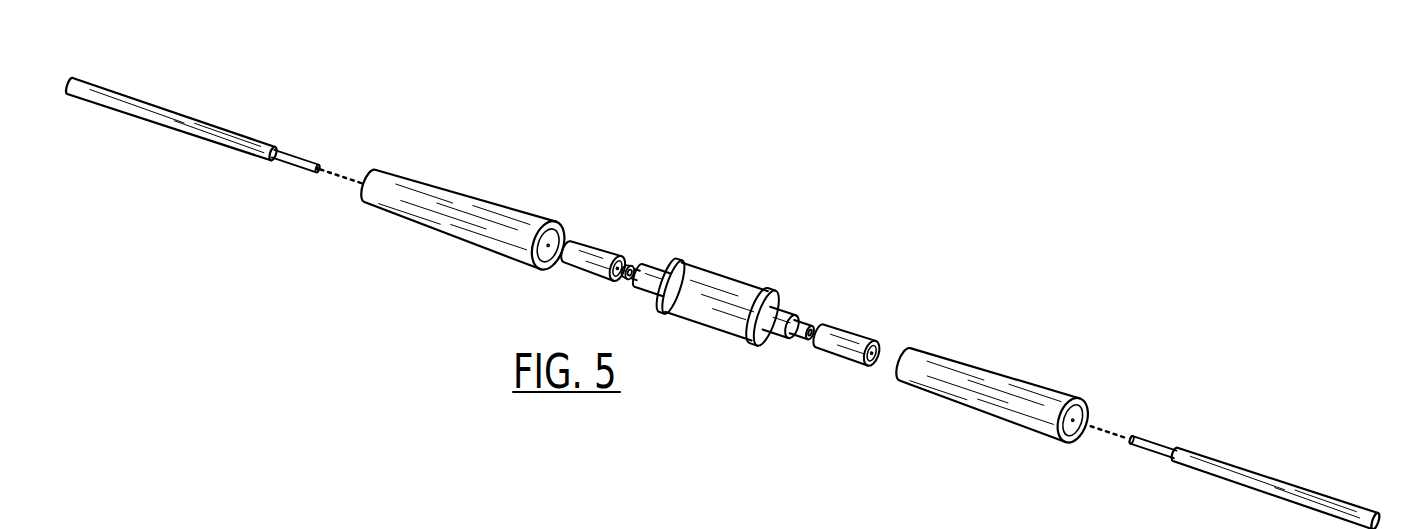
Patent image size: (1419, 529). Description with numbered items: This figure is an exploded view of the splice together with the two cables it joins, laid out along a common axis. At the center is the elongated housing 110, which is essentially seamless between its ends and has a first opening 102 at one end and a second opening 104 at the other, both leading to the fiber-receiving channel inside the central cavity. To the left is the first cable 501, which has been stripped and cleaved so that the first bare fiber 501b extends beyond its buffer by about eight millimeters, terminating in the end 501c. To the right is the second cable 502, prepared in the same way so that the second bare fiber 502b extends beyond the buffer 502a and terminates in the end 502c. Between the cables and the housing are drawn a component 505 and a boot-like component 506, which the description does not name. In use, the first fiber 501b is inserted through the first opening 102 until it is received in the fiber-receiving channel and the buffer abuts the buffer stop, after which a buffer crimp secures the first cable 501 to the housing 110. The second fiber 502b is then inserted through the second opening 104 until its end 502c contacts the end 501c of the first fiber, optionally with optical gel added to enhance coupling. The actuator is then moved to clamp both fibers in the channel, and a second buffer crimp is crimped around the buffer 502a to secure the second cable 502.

The first cable 501 is at (213, 130).
The first bare fiber 501b is at (115, 88).
The end of the first fiber 501c is at (320, 175).
The boot 506 is at (453, 227).
The ferrule sleeve 505 is at (598, 237).
The first opening 102 is at (625, 256).
The elongated housing 110 is at (708, 318).
The second opening 104 is at (820, 328).
The second cable 502 is at (1251, 464).
The buffer of the second cable 502a is at (1268, 478).
The second bare fiber 502b is at (1150, 440).
The end of the second fiber 502c is at (1130, 446).